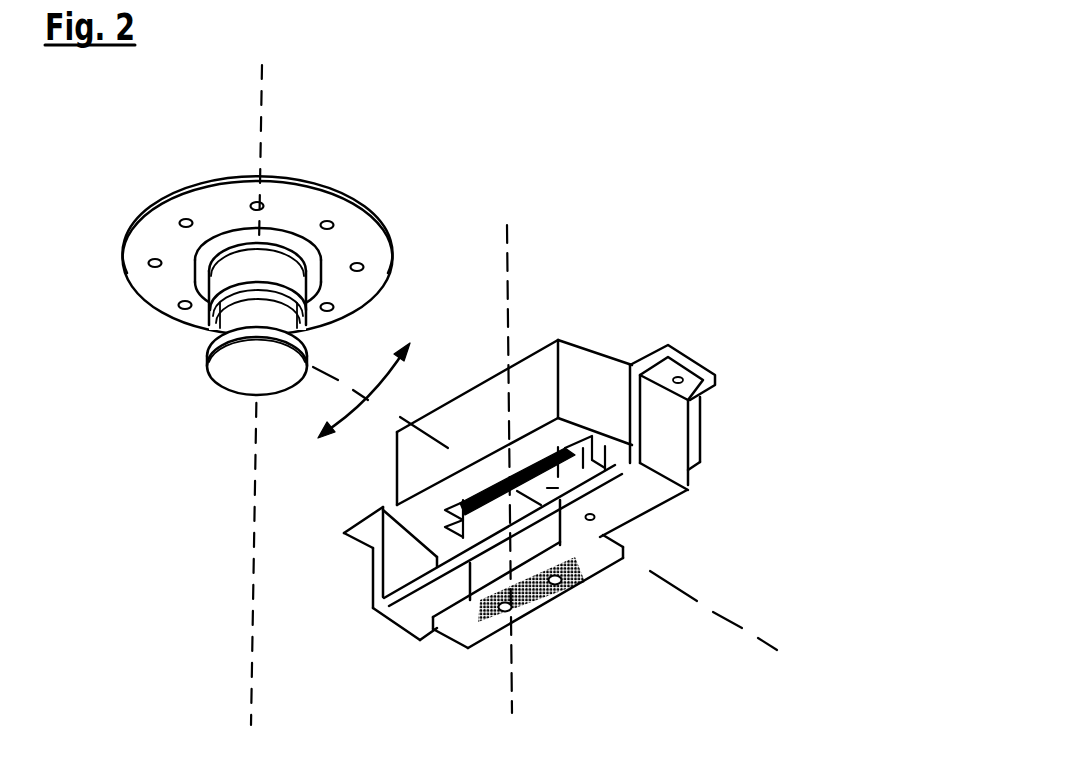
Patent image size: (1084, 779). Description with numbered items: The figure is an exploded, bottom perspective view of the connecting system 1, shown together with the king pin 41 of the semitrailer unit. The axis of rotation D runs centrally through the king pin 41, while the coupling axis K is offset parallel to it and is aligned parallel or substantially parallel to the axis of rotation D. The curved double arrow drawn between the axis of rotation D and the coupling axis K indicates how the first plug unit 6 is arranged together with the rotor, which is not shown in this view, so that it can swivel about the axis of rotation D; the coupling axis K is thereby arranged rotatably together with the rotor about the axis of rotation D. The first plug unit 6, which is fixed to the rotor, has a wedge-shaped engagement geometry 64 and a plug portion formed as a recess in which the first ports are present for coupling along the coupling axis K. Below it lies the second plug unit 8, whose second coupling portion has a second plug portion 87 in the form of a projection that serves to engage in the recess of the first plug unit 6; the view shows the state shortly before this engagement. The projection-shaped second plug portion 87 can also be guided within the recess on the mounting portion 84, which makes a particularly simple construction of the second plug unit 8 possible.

The connecting system 1 is at (607, 403).
The first plug unit 6 is at (606, 376).
The second plug unit 8 is at (665, 541).
The king pin 41 is at (298, 217).
The wedge-shaped engagement geometry 64 is at (590, 373).
The mounting portion 84 is at (847, 549).
The second plug portion 87 is at (704, 691).
The axis of rotation D is at (253, 597).
The coupling axis K is at (513, 688).